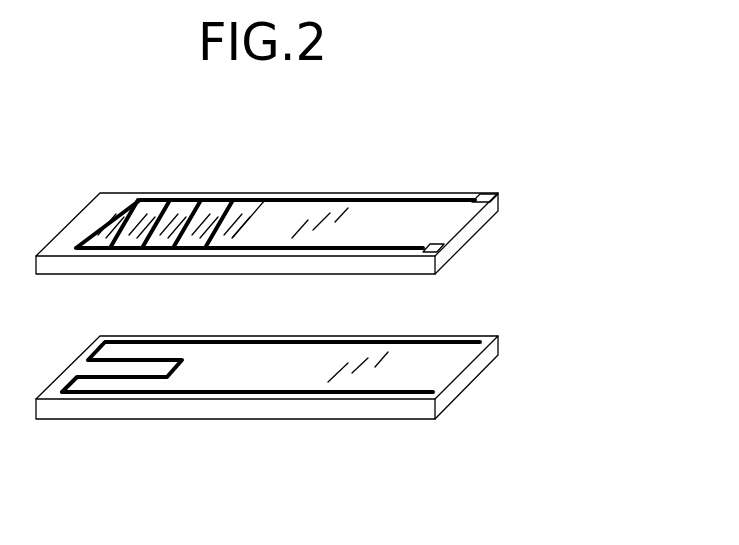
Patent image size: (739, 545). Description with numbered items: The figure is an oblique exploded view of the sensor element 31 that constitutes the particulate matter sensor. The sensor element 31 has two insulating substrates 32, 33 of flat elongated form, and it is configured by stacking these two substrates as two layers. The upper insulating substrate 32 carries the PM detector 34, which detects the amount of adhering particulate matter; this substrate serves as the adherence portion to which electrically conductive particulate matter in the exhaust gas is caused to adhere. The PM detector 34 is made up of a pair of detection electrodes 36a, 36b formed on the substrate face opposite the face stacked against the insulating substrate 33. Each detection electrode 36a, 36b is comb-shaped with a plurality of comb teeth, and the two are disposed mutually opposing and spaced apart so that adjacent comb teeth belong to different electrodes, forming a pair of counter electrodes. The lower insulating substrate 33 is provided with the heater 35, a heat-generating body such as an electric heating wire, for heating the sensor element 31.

The sensor element 31 is at (573, 203).
The insulating substrate 32 is at (455, 238).
The insulating substrate 33 is at (468, 372).
The PM detector 34 is at (275, 173).
The heater 35 is at (148, 393).
The detection electrode 36a is at (165, 206).
The detection electrode 36b is at (196, 215).